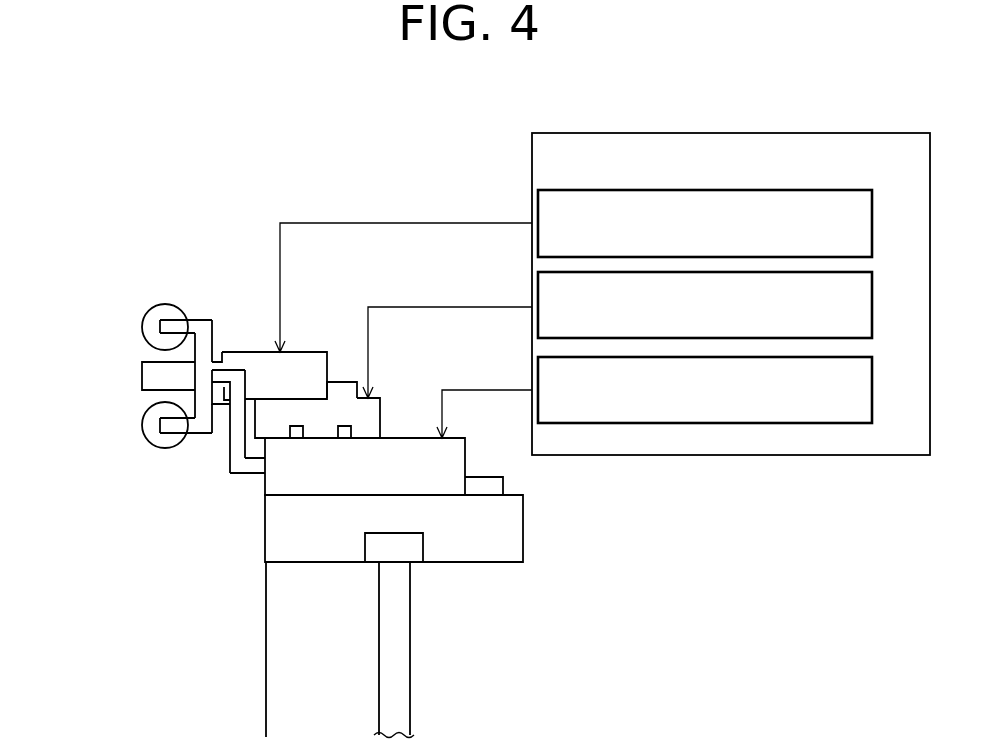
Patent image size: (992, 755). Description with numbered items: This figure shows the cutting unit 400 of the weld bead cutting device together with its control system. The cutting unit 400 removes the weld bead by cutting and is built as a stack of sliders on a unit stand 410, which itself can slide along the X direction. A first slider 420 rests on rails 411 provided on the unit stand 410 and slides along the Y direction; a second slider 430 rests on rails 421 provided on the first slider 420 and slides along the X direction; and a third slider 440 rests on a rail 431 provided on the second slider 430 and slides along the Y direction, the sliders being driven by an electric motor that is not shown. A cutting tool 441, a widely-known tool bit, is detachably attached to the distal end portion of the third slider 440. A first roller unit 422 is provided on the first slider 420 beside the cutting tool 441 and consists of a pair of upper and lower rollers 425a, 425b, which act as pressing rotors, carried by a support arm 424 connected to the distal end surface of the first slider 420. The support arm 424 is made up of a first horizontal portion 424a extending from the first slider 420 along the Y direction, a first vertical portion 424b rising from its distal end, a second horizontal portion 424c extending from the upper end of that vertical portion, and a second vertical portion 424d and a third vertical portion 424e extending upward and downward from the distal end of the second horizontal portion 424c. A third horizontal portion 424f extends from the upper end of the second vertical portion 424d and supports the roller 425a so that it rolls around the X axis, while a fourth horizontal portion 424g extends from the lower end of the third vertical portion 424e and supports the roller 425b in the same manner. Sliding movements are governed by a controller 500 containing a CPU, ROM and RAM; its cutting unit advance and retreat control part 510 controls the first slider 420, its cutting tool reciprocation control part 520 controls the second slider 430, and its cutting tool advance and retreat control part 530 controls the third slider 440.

The cutting unit 400 is at (222, 170).
The unit stand 410 is at (503, 553).
The rails 411 is at (496, 487).
The first slider 420 is at (442, 482).
The rails 421 is at (296, 438).
The first roller unit 422 is at (143, 455).
The support arm 424 is at (226, 476).
The first horizontal portion 424a is at (250, 474).
The first vertical portion 424b is at (230, 440).
The second horizontal portion 424c is at (226, 372).
The second vertical portion 424d is at (201, 347).
The third vertical portion 424e is at (204, 395).
The third horizontal portion 424f is at (197, 312).
The fourth horizontal portion 424g is at (142, 450).
The roller 425a is at (148, 325).
The roller 425b is at (148, 418).
The second slider 430 is at (373, 415).
The rail 431 is at (345, 390).
The third slider 440 is at (293, 364).
The cutting tool 441 is at (148, 375).
The controller 500 is at (840, 133).
The cutting unit advance and retreat control part 510 is at (877, 389).
The cutting tool reciprocation control part 520 is at (877, 304).
The cutting tool advance and retreat control part 530 is at (877, 222).